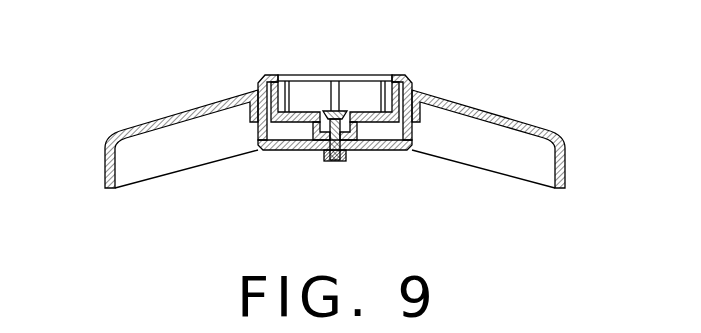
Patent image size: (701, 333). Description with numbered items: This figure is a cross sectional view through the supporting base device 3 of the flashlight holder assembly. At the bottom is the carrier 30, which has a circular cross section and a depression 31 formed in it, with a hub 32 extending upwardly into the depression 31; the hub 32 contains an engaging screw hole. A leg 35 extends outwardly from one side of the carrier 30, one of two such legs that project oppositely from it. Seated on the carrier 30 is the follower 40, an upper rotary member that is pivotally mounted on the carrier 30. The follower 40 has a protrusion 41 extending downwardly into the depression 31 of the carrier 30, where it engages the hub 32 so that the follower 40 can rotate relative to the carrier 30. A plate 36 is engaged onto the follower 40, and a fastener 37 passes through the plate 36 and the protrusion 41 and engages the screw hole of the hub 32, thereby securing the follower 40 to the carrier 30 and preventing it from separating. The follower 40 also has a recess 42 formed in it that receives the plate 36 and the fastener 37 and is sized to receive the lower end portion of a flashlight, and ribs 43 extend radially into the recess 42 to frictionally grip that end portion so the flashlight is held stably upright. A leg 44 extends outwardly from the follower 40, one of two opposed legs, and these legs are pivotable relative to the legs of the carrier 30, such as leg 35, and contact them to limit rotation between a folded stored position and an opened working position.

The supporting base device 3 is at (554, 104).
The carrier 30 is at (259, 146).
The depression 31 is at (283, 148).
The hub 32 is at (311, 142).
The leg 35 is at (497, 154).
The plate 36 is at (360, 78).
The fastener 37 is at (344, 153).
The follower 40 is at (264, 77).
The protrusion 41 is at (358, 147).
The recess 42 is at (297, 78).
The ribs 43 is at (335, 75).
The leg 44 is at (109, 143).